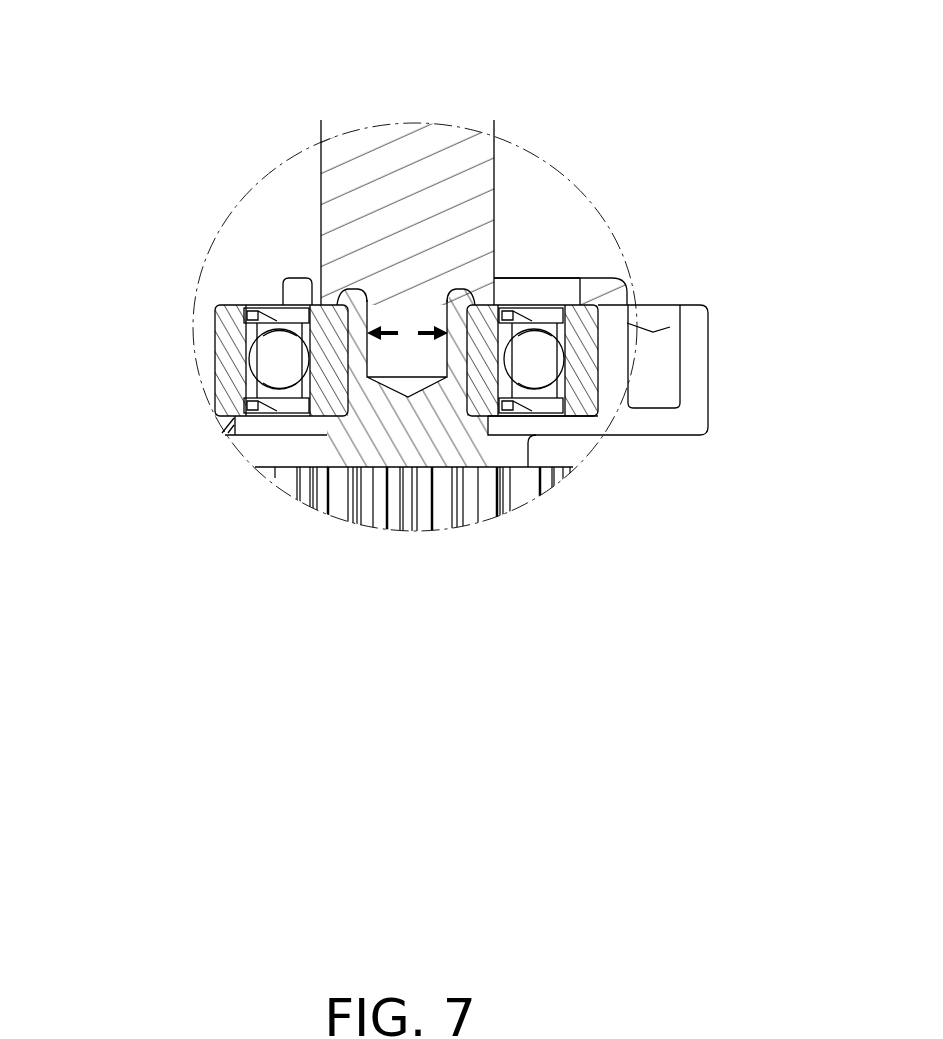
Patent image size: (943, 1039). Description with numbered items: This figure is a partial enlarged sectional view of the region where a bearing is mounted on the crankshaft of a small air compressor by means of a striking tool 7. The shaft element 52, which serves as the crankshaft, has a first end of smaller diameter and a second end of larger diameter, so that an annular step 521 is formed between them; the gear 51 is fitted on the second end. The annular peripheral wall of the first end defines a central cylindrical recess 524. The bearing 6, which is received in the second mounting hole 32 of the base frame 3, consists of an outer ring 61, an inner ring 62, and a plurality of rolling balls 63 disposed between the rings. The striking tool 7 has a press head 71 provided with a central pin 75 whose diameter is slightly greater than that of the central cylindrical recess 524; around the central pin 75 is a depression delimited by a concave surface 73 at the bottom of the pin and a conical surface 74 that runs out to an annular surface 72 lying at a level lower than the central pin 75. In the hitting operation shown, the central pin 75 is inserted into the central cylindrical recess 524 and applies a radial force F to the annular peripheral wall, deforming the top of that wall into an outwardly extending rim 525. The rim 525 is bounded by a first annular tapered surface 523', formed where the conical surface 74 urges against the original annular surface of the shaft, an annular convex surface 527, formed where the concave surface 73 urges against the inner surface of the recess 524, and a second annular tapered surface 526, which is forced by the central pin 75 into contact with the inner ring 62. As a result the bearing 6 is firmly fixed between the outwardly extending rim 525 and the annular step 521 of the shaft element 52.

The striking tool 7 is at (426, 137).
The press head 71 is at (364, 305).
The annular surface 72 is at (457, 290).
The concave surface 73 is at (463, 380).
The conical surface 74 is at (496, 340).
The central pin 75 is at (411, 350).
The bearing 6 is at (613, 404).
The outer ring 61 is at (628, 313).
The inner ring 62 is at (517, 307).
The rolling balls 63 is at (545, 362).
The base frame 3 is at (700, 418).
The second mounting hole 32 is at (293, 425).
The gear 51 is at (477, 507).
The shaft element 52 is at (345, 362).
The annular step 521 is at (510, 415).
The first annular tapered surface 523' is at (219, 254).
The central cylindrical recess 524 is at (374, 387).
The outwardly extending rim 525 is at (283, 287).
The second annular tapered surface 526 is at (296, 342).
The annular convex surface 527 is at (362, 307).
The radial force F is at (404, 390).